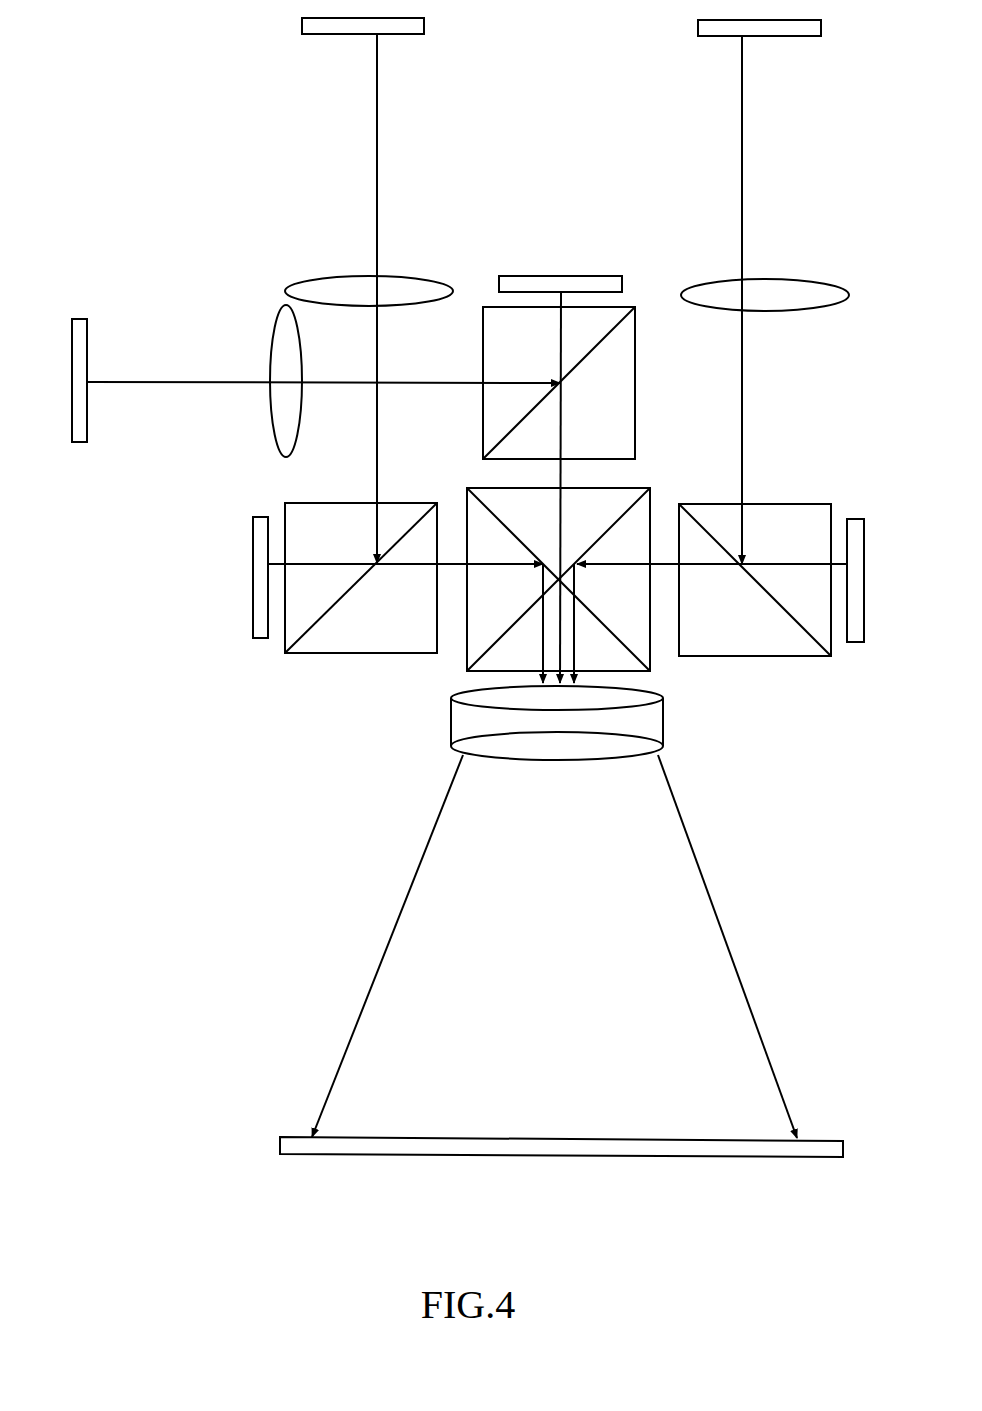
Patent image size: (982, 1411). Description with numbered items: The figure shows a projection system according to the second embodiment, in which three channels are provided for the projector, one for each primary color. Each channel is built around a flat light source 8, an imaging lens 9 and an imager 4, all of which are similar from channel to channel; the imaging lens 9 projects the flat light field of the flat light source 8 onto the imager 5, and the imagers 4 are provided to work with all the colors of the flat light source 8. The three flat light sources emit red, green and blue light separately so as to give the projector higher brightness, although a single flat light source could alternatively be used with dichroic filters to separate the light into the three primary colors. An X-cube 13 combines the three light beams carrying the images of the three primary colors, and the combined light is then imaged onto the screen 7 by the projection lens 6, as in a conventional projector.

The imager 4 is at (546, 276).
The imager 5 is at (605, 398).
The projection lens 6 is at (452, 718).
The screen 7 is at (387, 1137).
The flat light source 8 is at (72, 320).
The imaging lens 9 is at (272, 335).
The X-cube 13 is at (618, 595).